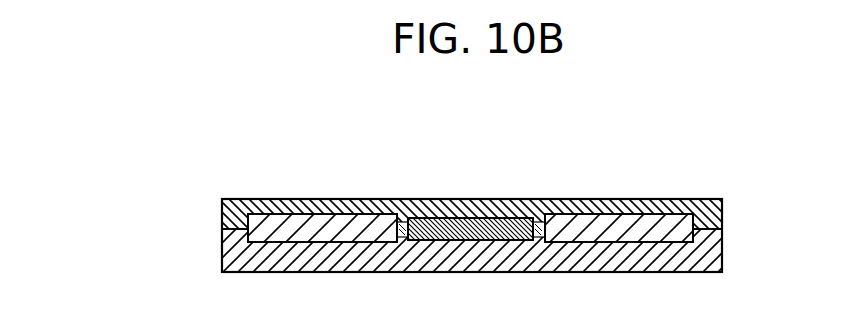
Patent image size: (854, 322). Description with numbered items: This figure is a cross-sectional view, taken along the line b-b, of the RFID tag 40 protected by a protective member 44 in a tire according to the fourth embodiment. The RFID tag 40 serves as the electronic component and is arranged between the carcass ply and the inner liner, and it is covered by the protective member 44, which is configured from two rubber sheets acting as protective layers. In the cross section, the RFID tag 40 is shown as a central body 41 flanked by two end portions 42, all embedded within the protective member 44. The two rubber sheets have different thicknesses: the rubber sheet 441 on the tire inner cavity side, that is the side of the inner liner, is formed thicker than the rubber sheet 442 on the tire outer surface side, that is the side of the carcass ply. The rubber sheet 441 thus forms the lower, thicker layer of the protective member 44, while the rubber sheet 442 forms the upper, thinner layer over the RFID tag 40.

The RFID tag 40 is at (475, 165).
The piezoelectric body 41 is at (496, 216).
The electrode 42 is at (373, 199).
The protective member 44 is at (396, 243).
The rubber sheet 441 is at (428, 259).
The rubber sheet 442 is at (222, 213).